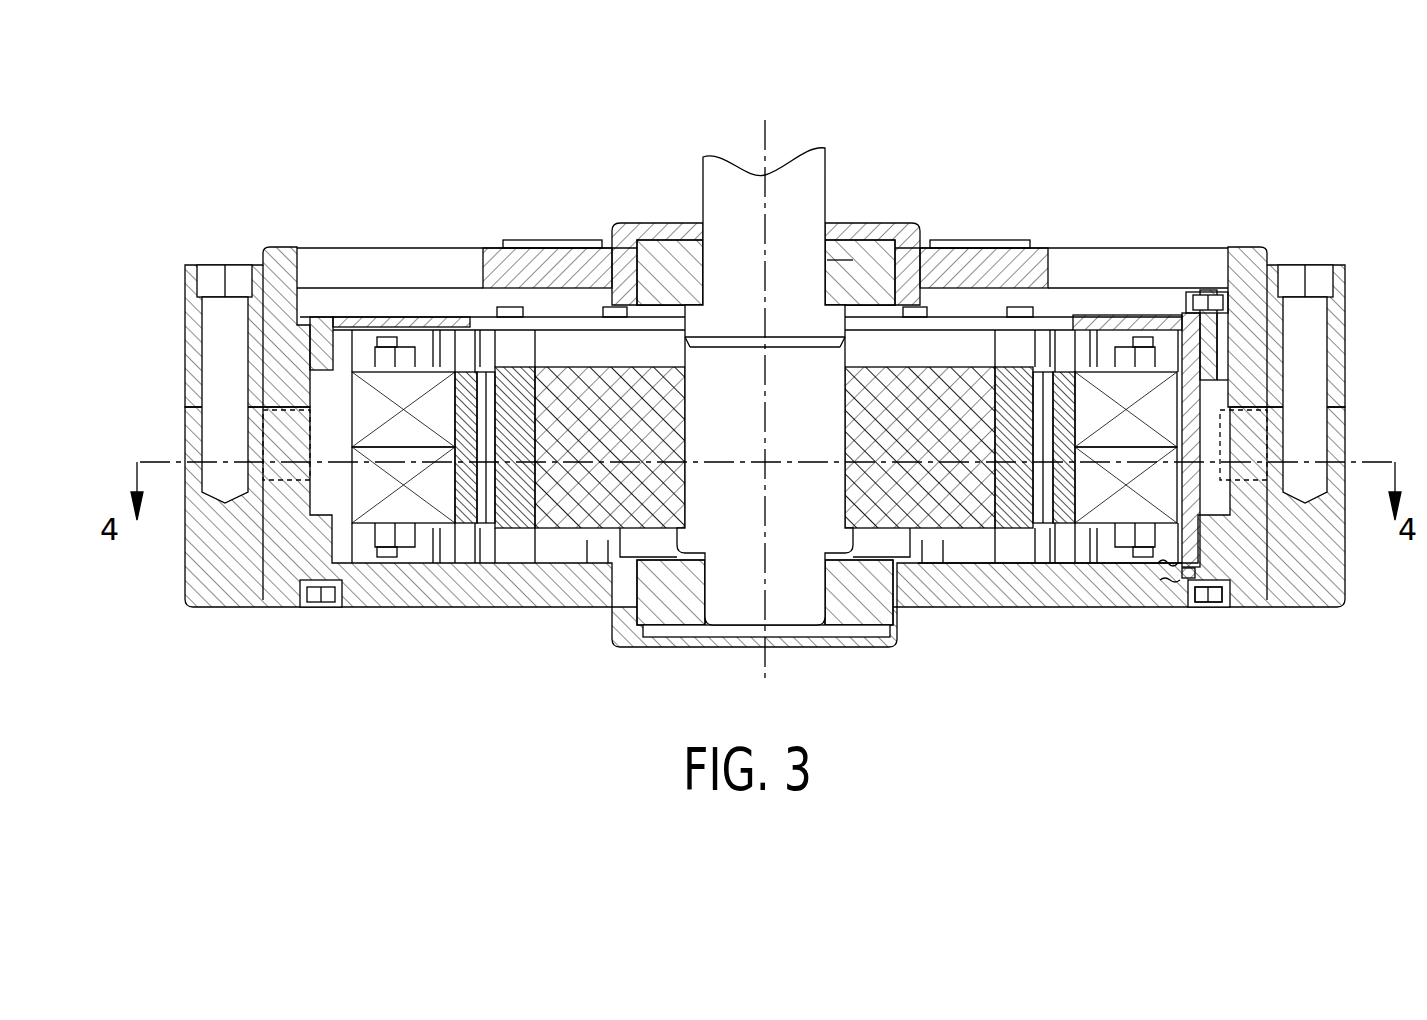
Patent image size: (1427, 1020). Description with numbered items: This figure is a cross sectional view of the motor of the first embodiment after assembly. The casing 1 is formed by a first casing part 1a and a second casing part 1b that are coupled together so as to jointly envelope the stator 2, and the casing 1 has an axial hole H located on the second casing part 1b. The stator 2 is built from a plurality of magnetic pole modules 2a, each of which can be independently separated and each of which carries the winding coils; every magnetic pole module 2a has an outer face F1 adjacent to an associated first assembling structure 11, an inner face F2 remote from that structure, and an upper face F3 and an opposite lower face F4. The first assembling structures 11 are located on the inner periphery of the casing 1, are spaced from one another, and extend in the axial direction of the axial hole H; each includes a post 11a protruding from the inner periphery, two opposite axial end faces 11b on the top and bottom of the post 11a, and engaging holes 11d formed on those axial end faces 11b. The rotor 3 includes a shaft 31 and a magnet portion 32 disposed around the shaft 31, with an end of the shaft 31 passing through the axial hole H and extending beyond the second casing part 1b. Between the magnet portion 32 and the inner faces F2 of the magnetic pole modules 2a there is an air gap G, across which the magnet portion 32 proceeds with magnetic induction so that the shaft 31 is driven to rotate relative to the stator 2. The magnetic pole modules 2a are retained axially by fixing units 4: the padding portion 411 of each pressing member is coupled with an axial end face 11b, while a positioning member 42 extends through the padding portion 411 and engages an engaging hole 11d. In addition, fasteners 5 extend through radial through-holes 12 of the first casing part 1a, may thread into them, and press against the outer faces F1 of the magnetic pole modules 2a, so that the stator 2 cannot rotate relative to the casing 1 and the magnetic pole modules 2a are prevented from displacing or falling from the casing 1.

The casing 1 is at (698, 447).
The first casing part 1a is at (185, 433).
The second casing part 1b is at (185, 352).
The stator 2 is at (455, 263).
The magnetic pole module 2a is at (398, 288).
The rotor 3 is at (973, 330).
The shaft 31 is at (812, 174).
The magnet portion 32 is at (517, 385).
The fixing unit 4 is at (1211, 432).
The padding portion 411 is at (1186, 298).
The positioning member 42 is at (1188, 293).
The fastener 5 is at (287, 493).
The radial through-hole 12 is at (1248, 485).
The first assembling structure 11 is at (1230, 416).
The post 11a is at (1156, 344).
The axial end face 11b is at (1222, 333).
The engaging hole 11d is at (1222, 338).
The outer face F1 is at (320, 370).
The inner face F2 is at (487, 500).
The upper face F3 is at (350, 365).
The lower face F4 is at (360, 527).
The air gap G is at (1075, 530).
The axial hole H is at (827, 260).